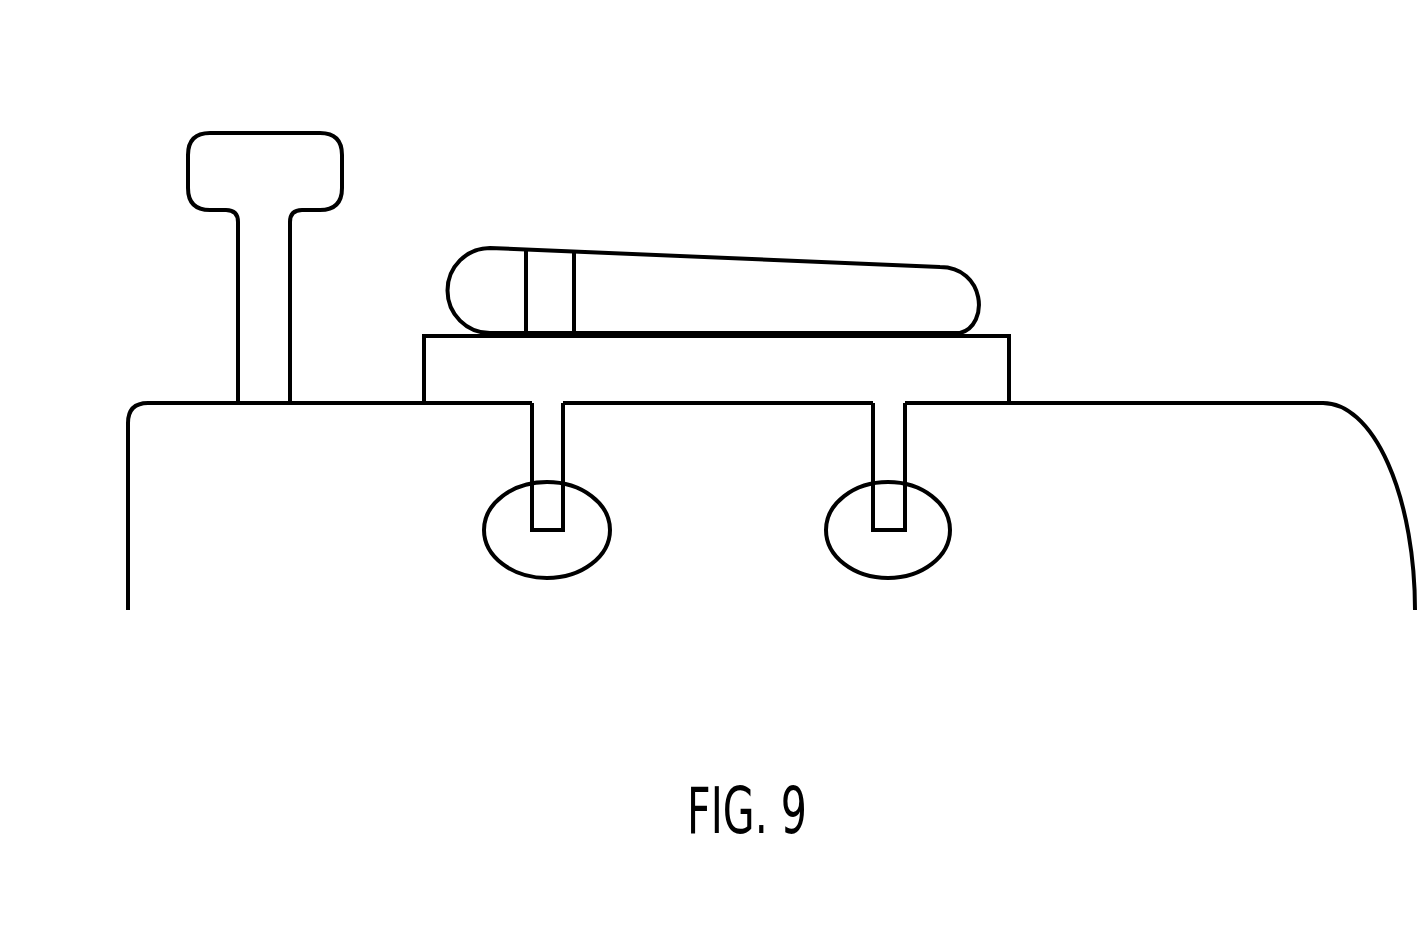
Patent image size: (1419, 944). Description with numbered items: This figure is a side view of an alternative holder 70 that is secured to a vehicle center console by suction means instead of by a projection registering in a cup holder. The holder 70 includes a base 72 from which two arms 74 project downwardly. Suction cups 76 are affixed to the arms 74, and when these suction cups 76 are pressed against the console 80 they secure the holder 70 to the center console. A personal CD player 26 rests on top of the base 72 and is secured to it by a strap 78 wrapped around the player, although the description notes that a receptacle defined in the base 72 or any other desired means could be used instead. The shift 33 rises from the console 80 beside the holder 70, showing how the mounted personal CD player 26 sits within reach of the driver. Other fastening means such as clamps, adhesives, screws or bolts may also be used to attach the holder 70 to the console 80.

The personal CD player 26 is at (855, 297).
The shift 33 is at (267, 153).
The holder 70 is at (1050, 326).
The base 72 is at (982, 379).
The arms 74 is at (553, 443).
The suction cups 76 is at (538, 552).
The strap 78 is at (549, 277).
The console 80 is at (298, 512).